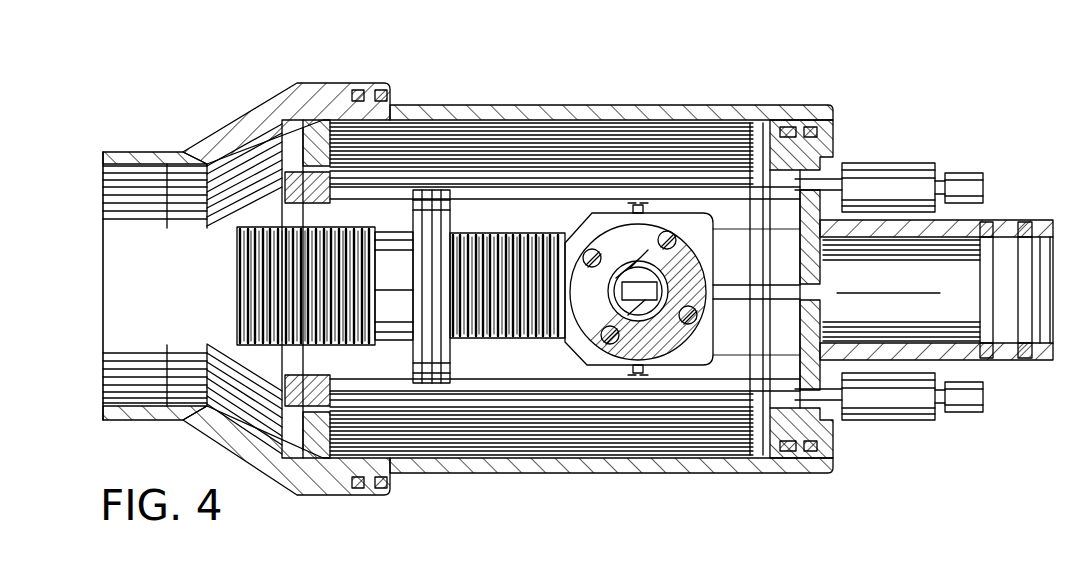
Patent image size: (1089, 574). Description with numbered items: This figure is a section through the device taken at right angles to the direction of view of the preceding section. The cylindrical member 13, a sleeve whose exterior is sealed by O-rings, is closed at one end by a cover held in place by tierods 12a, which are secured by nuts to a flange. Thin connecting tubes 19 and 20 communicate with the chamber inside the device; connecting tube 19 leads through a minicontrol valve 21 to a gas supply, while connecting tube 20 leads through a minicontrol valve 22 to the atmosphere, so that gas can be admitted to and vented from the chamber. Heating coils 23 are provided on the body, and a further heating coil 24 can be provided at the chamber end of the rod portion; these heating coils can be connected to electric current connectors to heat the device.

The tierods 12a is at (383, 182).
The cylindrical member 13 is at (604, 117).
The thin connecting tube 19 is at (643, 212).
The thin connecting tube 20 is at (638, 372).
The minicontrol valve 21 is at (868, 177).
The minicontrol valve 22 is at (900, 392).
The heating coils 23 is at (507, 235).
The heating coil 24 is at (237, 242).